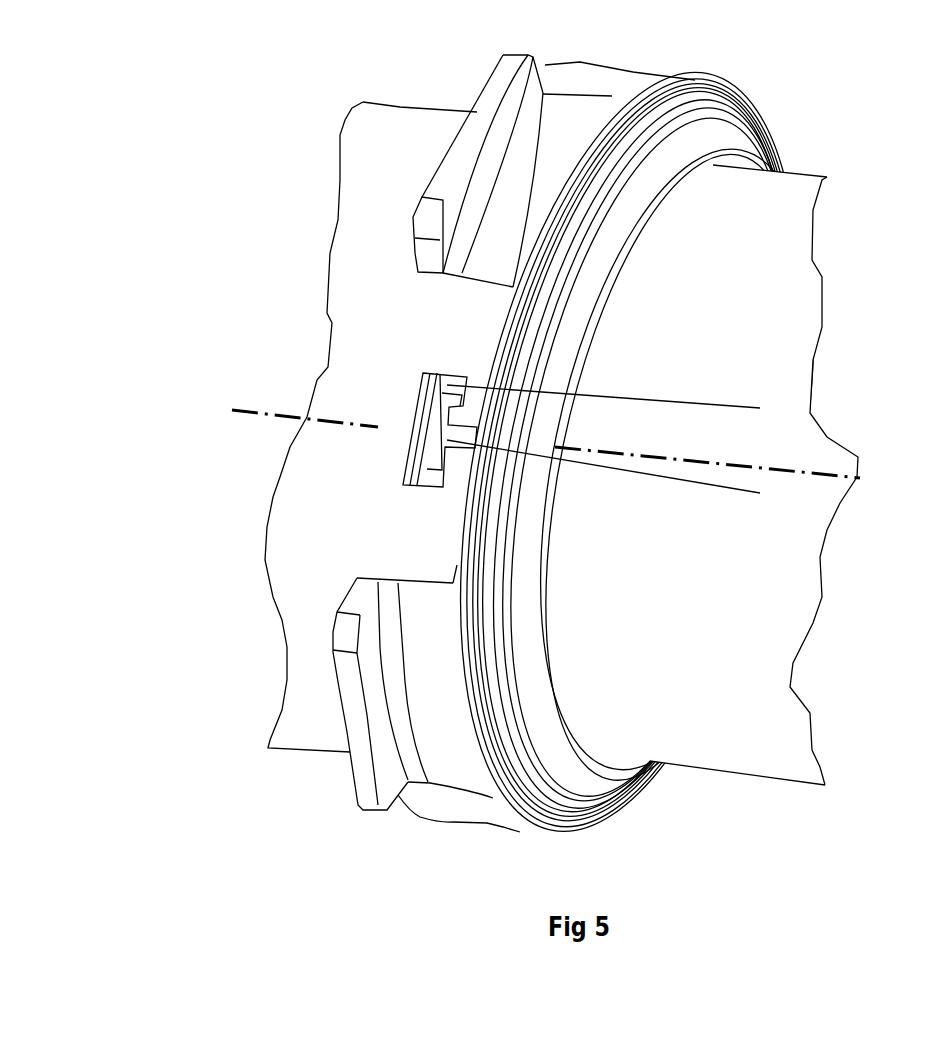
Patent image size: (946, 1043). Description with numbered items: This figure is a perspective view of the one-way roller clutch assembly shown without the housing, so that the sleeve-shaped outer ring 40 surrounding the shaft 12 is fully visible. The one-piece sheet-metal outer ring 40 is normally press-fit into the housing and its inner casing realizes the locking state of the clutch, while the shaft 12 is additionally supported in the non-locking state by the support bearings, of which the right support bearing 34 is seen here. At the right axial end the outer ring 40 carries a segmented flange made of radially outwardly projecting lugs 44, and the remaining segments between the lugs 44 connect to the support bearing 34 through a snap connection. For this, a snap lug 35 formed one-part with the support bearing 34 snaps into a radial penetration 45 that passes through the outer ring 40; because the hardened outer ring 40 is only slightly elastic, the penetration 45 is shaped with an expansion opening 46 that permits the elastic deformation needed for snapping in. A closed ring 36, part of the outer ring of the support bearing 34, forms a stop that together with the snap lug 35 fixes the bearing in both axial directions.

The shaft 12 is at (688, 652).
The right support bearing 34 is at (603, 267).
The snap lug 35 is at (443, 422).
The closed ring 36 is at (717, 85).
The outer ring 40 is at (363, 176).
The lugs 44 is at (495, 98).
The radial penetration 45 is at (760, 408).
The expansion opening 46 is at (760, 493).